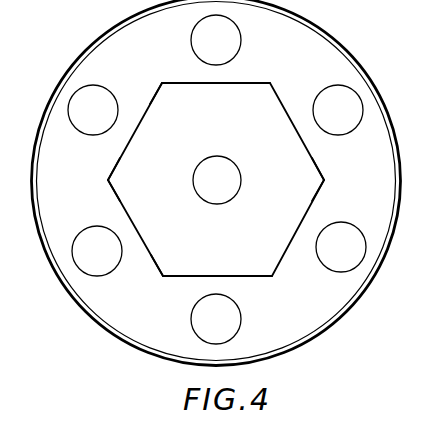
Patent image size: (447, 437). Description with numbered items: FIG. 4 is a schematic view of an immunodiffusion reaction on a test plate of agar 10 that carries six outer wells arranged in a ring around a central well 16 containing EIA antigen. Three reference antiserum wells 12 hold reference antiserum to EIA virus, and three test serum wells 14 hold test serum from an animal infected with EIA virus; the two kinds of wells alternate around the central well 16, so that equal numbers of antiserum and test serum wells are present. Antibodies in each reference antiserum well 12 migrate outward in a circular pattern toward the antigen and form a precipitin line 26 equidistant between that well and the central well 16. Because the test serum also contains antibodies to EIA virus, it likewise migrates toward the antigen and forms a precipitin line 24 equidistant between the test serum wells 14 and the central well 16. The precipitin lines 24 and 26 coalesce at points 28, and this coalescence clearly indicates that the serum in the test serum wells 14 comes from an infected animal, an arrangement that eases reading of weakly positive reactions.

The test plate of agar 10 is at (93, 41).
The reference antiserum well 12 is at (192, 40).
The test serum well 14 is at (100, 92).
The central well 16 is at (193, 180).
The precipitin line 24 is at (136, 132).
The precipitin line 26 is at (222, 84).
The points of coalescence 28 is at (162, 83).